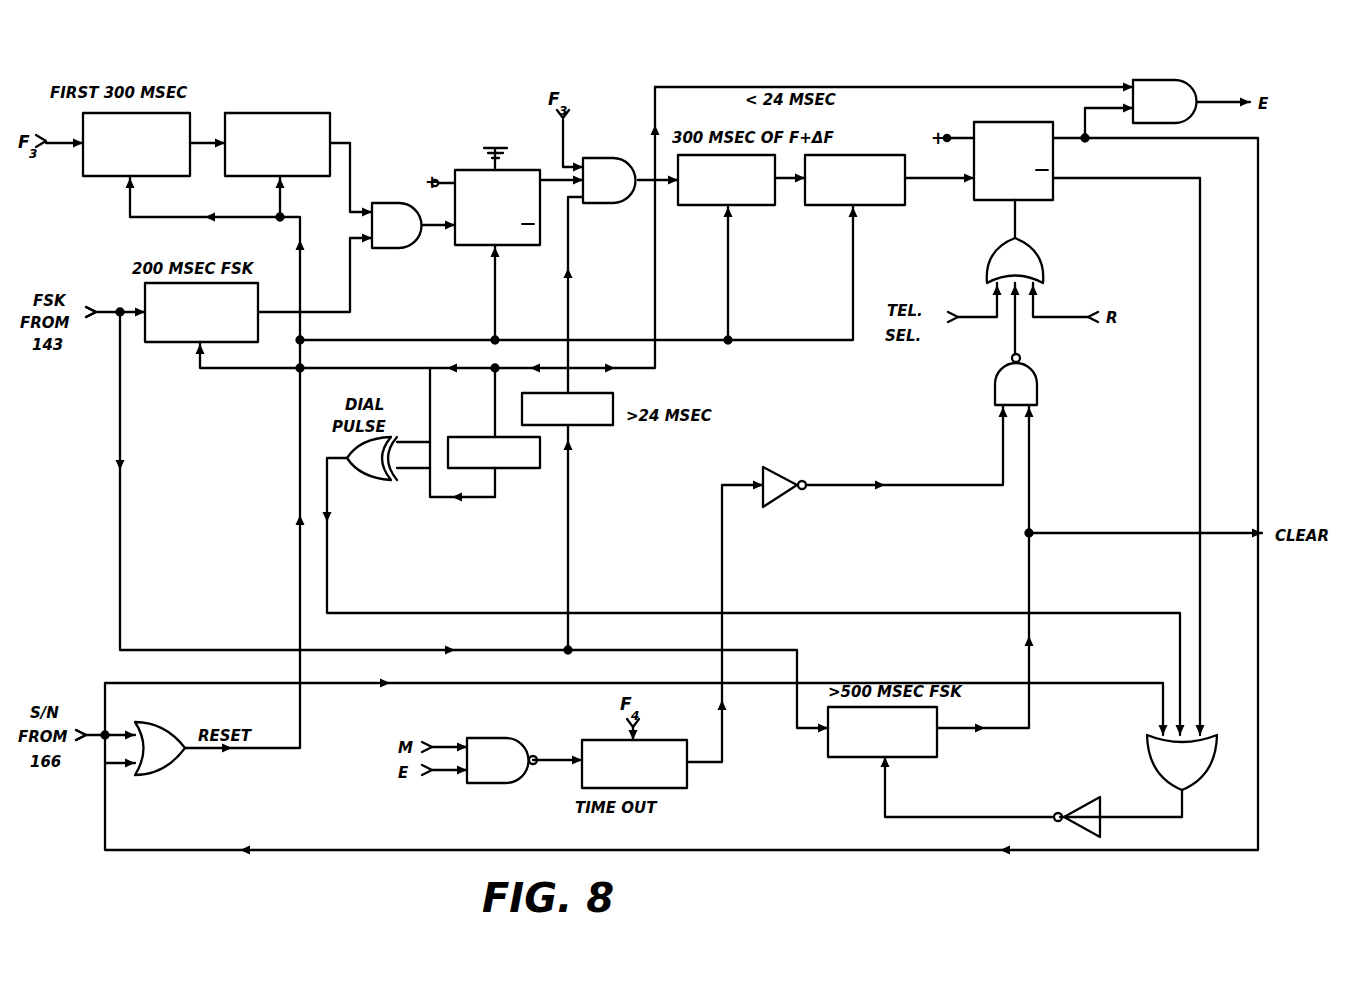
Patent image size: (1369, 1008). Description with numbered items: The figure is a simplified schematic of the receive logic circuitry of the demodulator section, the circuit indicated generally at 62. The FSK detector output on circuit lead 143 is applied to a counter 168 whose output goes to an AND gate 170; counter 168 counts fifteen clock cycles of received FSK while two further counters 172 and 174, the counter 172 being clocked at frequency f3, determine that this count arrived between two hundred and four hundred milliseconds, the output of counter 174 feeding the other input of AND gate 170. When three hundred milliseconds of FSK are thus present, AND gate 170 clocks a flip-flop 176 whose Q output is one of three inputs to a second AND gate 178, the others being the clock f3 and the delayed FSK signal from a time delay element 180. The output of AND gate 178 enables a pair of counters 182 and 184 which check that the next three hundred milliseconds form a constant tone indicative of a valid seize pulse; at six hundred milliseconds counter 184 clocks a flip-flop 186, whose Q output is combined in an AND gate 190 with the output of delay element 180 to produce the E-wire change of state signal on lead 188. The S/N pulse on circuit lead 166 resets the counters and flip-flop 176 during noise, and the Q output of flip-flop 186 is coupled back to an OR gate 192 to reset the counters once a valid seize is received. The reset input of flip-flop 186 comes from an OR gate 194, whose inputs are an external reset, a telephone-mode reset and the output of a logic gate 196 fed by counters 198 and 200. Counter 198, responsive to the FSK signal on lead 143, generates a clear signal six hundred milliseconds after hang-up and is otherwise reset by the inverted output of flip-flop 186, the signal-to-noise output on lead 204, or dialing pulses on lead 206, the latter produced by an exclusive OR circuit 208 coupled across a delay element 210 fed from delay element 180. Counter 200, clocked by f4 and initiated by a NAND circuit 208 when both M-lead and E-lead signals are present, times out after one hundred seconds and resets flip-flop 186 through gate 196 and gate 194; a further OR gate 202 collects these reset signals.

The frequency detection circuit 62 is at (518, 112).
The counter 168 is at (164, 342).
The AND gate 170 is at (385, 203).
The counter 172 is at (100, 177).
The counter 174 is at (332, 122).
The flip-flop 176 is at (465, 170).
The AND gate 178 is at (600, 158).
The time delay element 180 is at (595, 425).
The counter 182 is at (755, 205).
The counter 184 is at (873, 205).
The flip-flop 186 is at (992, 124).
The lead 188 is at (1214, 102).
The AND gate 190 is at (1186, 96).
The OR gate 192 is at (162, 725).
The OR gate 194 is at (1035, 262).
The logic gate 196 is at (1040, 380).
The counter 198 is at (937, 752).
The counter 200 is at (688, 778).
The OR gate 202 is at (1147, 761).
The lead 204 is at (407, 684).
The signal lead 206 is at (406, 612).
The exclusive OR circuit 208 is at (368, 488).
The delay element 210 is at (517, 468).
The circuit lead 143 is at (64, 330).
The circuit lead 166 is at (58, 750).